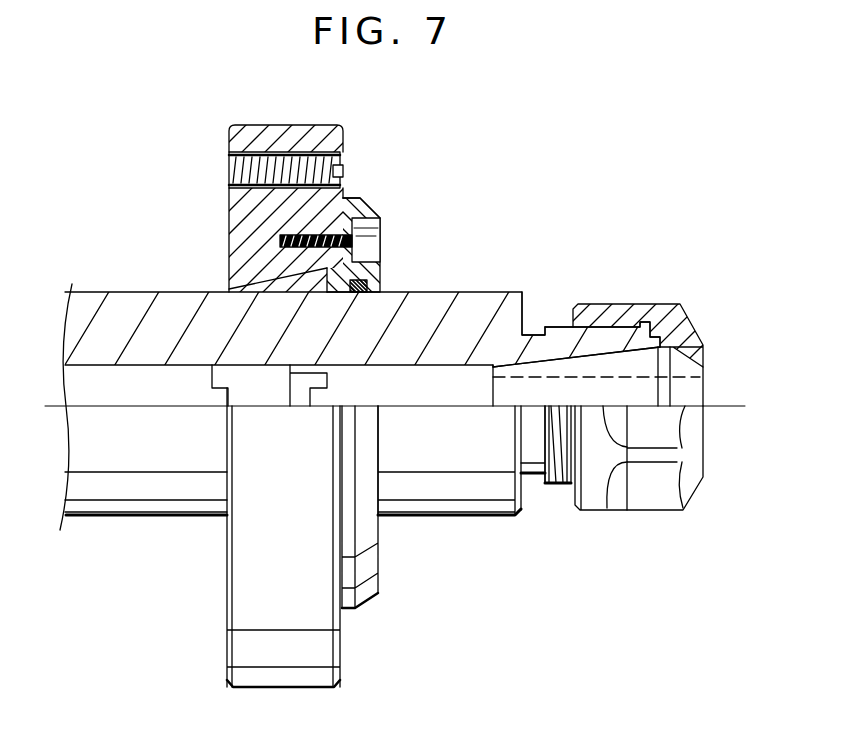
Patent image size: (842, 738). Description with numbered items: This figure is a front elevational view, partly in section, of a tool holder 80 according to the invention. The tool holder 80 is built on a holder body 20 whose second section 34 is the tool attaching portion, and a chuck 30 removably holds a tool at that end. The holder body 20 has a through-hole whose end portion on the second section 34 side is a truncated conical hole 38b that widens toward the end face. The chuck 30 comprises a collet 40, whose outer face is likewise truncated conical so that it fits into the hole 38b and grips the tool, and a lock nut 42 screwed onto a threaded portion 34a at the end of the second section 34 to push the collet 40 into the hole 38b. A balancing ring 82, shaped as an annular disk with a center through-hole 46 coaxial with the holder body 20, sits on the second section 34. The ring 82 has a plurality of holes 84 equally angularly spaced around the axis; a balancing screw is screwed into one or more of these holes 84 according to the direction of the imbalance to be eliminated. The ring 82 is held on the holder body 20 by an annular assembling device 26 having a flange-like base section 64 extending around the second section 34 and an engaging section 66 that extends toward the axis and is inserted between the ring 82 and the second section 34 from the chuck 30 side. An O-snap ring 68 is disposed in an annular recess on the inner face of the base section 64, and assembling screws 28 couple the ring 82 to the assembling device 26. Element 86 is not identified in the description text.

The holder body 20 is at (163, 515).
The assembling device 26 is at (370, 204).
The assembling screws 28 is at (381, 224).
The chuck 30 is at (657, 513).
The second section 34 is at (437, 506).
The threaded portion 34a is at (568, 322).
The truncated conical hole 38b is at (540, 370).
The collet 40 is at (600, 398).
The lock nut 42 is at (683, 302).
The through-hole 46 is at (253, 278).
The base section 64 is at (345, 202).
The engaging section 66 is at (230, 283).
The O-snap ring 68 is at (382, 284).
The tool holder 80 is at (651, 239).
The ring 82 is at (229, 135).
The holes 84 is at (238, 178).
The spring seat 86 is at (338, 166).